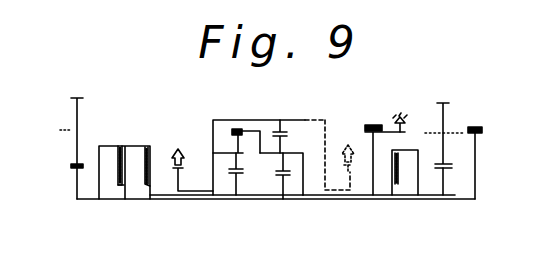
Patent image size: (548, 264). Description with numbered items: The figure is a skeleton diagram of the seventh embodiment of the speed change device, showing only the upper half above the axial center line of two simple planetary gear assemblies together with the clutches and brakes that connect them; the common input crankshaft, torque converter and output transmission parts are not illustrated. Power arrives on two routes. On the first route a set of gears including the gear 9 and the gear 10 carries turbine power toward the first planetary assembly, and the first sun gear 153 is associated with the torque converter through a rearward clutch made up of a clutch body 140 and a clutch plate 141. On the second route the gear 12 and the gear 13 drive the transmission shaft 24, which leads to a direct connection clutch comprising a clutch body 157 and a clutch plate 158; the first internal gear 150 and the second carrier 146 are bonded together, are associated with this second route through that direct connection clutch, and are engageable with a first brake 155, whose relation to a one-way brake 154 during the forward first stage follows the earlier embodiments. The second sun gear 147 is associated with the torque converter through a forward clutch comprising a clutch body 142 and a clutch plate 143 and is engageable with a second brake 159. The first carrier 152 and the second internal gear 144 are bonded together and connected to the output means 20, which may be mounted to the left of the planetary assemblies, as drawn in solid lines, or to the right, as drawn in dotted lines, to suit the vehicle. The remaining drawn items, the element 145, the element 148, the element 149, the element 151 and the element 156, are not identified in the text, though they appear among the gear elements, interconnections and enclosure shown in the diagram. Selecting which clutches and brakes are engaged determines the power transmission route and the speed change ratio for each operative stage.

The gear 9 is at (77, 148).
The gear 10 is at (77, 186).
The gear 12 is at (445, 152).
The gear 13 is at (444, 182).
The output gear 20 is at (182, 177).
The transmission shaft 24 is at (432, 199).
The clutch body 140 is at (138, 180).
The clutch plate 141 is at (152, 193).
The clutch body 142 is at (116, 180).
The clutch plate 143 is at (120, 190).
The second internal gear 144 is at (284, 137).
The electrode shelf 145 is at (292, 153).
The second carrier 146 is at (310, 121).
The second sun gear 147 is at (283, 187).
The base conductor 148 is at (357, 196).
The housing 149 is at (212, 195).
The first internal gear 150 is at (250, 131).
The contact block 151 is at (231, 131).
The first carrier 152 is at (243, 154).
The first sun gear 153 is at (238, 187).
The one-way brake 154 is at (406, 124).
The first brake 155 is at (375, 125).
The dashed enclosure 156 is at (335, 192).
The clutch body 157 is at (401, 178).
The clutch plate 158 is at (394, 184).
The second brake 159 is at (477, 125).